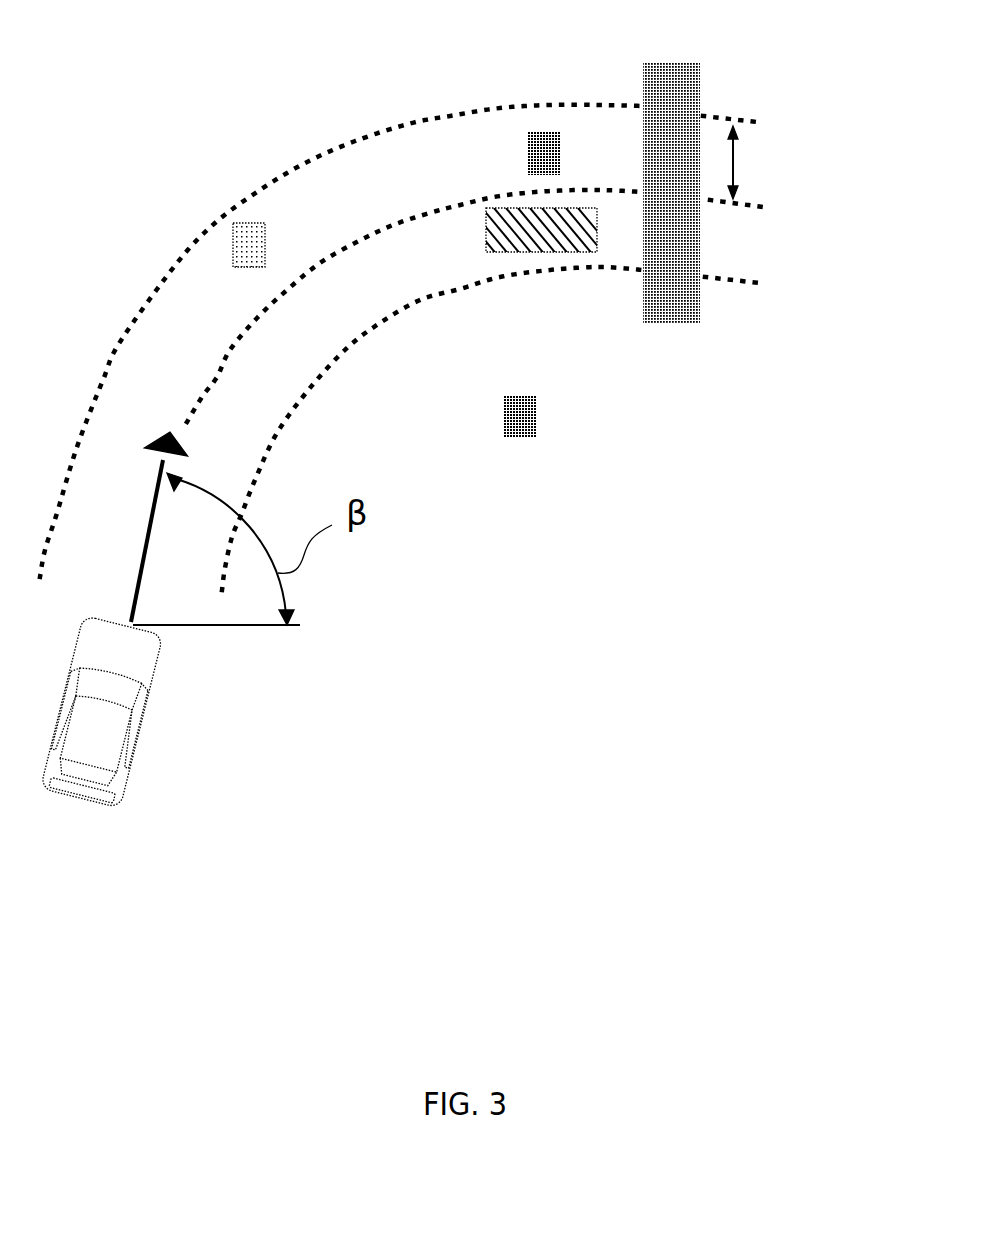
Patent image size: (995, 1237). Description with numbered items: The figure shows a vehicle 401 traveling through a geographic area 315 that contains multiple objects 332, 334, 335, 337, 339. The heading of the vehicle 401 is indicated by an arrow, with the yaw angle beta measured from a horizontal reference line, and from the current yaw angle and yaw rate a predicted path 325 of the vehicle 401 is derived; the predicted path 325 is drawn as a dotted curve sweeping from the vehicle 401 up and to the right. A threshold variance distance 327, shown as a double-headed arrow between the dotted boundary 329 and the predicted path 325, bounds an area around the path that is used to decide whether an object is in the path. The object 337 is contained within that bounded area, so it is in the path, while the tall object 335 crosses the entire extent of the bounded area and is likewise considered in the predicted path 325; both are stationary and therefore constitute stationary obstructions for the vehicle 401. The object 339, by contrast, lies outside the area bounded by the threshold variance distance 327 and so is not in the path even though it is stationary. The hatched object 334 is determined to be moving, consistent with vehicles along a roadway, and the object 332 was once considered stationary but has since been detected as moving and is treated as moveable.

The geographic area 315 is at (310, 23).
The predicted path 325 is at (765, 208).
The threshold variance distance 327 is at (735, 173).
The lane boundary 329 is at (742, 120).
The object 332 is at (265, 243).
The object 334 is at (486, 240).
The object 335 is at (700, 90).
The object 337 is at (561, 168).
The object 339 is at (537, 430).
The vehicle 401 is at (140, 717).